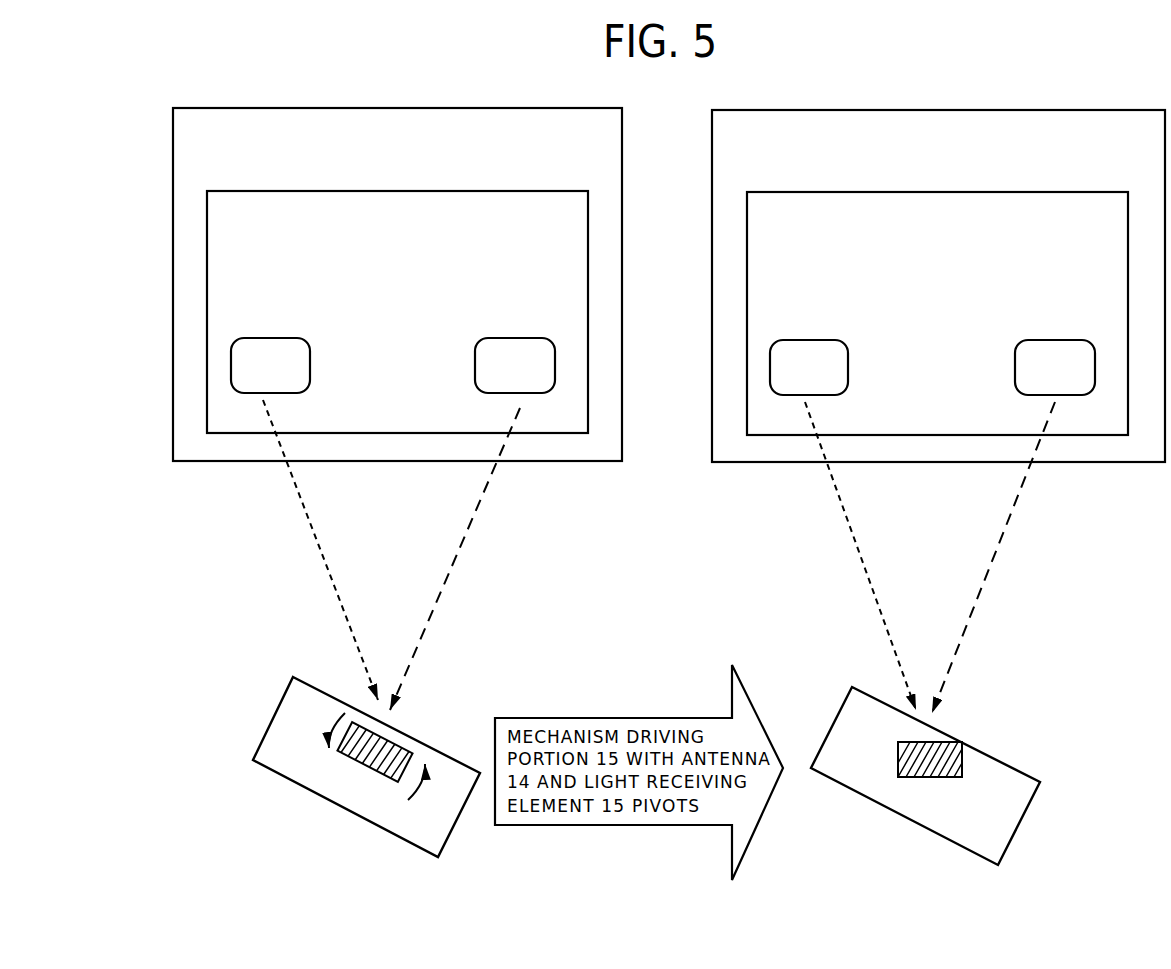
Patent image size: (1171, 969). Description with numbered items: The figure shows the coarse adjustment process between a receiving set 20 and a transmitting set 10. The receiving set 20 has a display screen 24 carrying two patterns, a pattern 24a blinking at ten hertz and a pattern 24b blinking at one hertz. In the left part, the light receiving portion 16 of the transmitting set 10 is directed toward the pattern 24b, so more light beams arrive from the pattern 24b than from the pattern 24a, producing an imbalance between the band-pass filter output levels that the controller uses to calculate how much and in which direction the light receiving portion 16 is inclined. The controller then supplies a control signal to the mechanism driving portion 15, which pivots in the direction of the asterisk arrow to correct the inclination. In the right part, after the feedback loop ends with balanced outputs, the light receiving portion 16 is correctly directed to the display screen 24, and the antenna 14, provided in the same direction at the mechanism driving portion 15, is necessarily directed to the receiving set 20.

The transmitting set 10 is at (284, 690).
The antenna 14 is at (649, 752).
The mechanism driving portion 15 is at (720, 714).
The light receiving portion 16 is at (403, 742).
The receiving set 20 is at (285, 108).
The display screen 24 is at (536, 191).
The pattern 24a is at (276, 338).
The pattern 24b is at (523, 338).